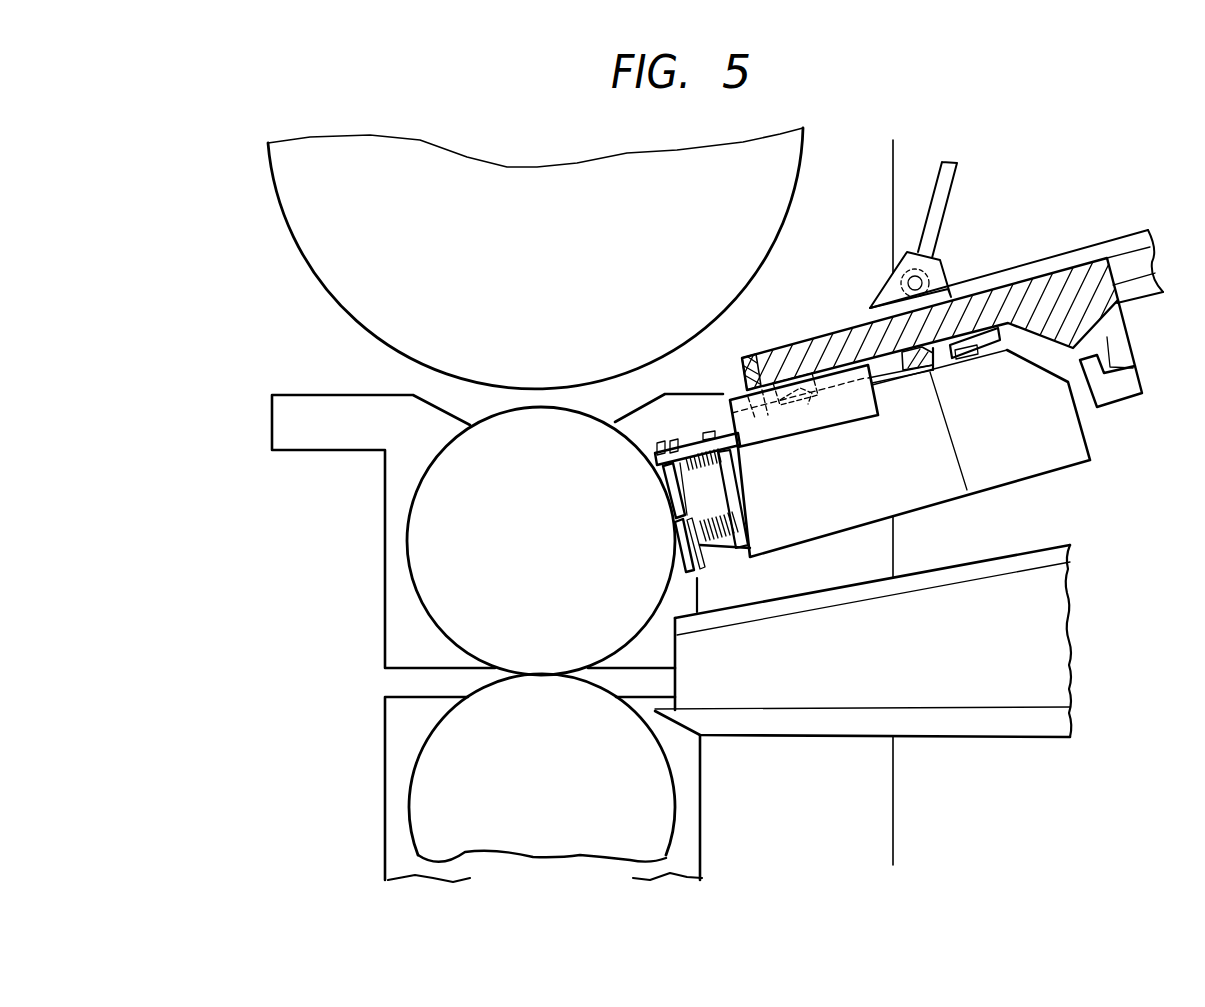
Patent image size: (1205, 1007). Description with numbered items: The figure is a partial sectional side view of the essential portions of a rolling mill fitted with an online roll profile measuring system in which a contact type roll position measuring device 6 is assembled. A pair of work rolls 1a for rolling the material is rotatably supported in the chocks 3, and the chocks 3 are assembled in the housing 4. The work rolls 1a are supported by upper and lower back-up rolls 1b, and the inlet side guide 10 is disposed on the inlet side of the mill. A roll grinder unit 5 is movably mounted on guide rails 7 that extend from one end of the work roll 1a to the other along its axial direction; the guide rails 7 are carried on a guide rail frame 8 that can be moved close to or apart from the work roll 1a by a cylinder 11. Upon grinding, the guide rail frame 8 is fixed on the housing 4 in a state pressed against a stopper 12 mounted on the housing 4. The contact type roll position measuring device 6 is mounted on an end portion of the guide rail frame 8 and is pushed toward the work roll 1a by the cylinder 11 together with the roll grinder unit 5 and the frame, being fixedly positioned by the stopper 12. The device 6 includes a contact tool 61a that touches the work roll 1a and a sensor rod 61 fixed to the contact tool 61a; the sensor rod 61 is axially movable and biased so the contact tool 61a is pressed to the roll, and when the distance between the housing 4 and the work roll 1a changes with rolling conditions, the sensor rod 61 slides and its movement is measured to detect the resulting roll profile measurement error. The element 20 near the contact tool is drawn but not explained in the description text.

The work roll 1a is at (432, 543).
The back-up roll 1b is at (314, 272).
The chock 3 is at (392, 608).
The housing 4 is at (893, 825).
The roll grinder unit 5 is at (1058, 488).
The contact type roll position measuring device 6 is at (815, 442).
The guide rail 7 is at (909, 330).
The guide rail frame 8 is at (1063, 275).
The inlet side guide 10 is at (1060, 682).
The cylinder 11 is at (943, 197).
The stopper 12 is at (1122, 396).
The blade 20 is at (675, 550).
The sensor rod 61 is at (692, 450).
The contact tool 61a is at (668, 490).